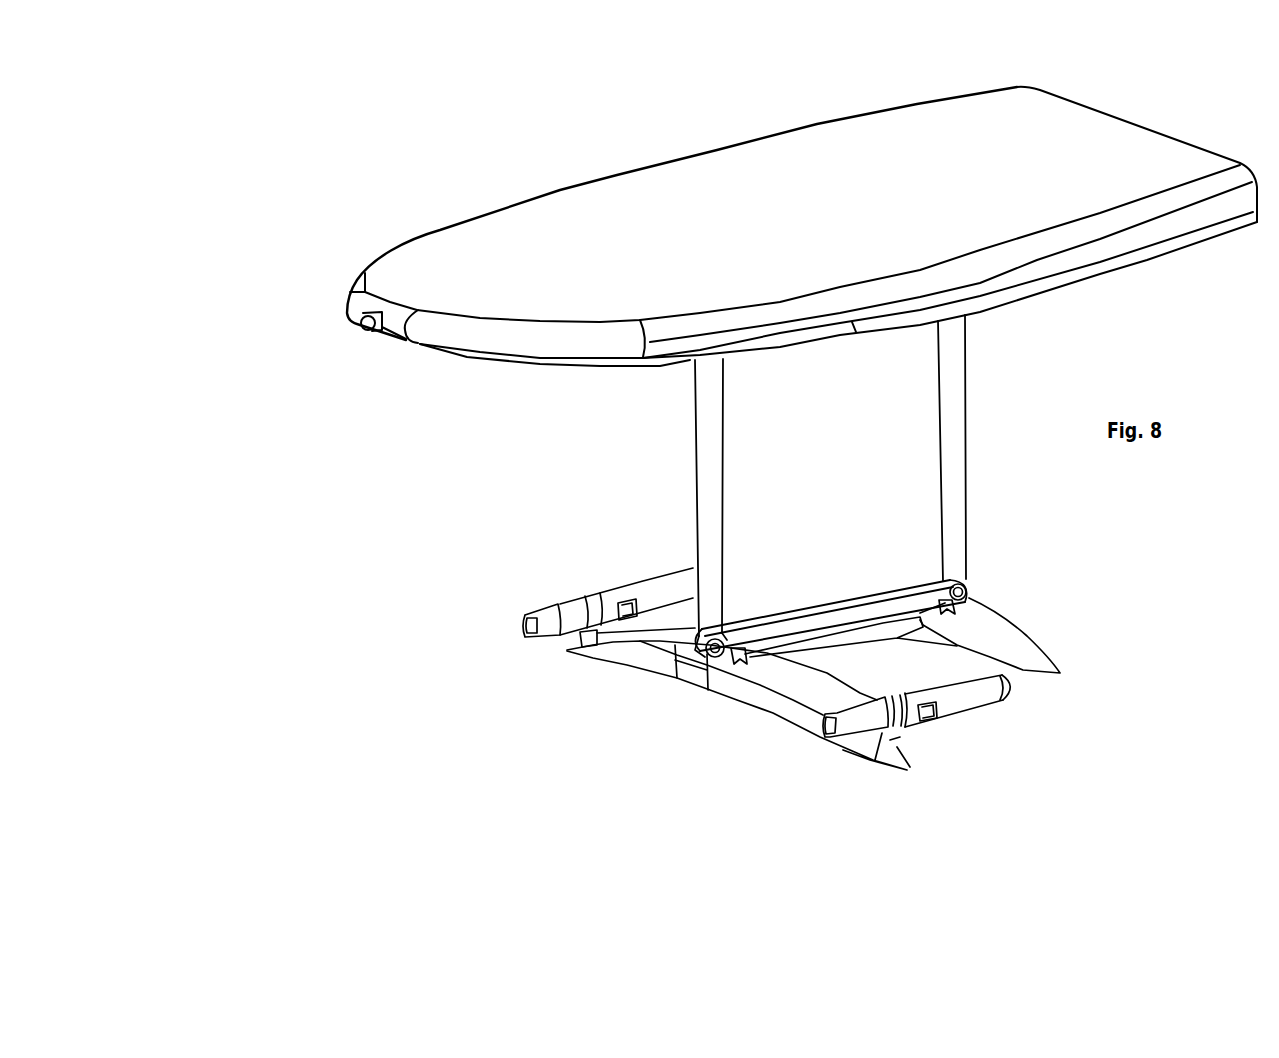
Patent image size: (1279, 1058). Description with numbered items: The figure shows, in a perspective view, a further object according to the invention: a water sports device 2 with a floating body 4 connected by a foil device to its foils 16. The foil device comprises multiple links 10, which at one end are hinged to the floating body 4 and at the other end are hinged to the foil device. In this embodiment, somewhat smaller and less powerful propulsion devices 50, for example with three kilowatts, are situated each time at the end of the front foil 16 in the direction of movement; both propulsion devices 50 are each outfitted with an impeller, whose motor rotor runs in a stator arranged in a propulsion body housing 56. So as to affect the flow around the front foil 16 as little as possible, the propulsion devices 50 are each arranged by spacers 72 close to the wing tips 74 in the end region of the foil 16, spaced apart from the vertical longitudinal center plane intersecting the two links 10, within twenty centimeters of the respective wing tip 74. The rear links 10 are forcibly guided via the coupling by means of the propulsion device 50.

The water sports device 2 is at (270, 542).
The floating body 4 is at (645, 212).
The links 10 is at (707, 487).
The foil 16 is at (783, 687).
The propulsion device 50 is at (646, 546).
The propulsion body housing 56 is at (650, 605).
The spacers 72 is at (577, 650).
The wing tips 74 is at (568, 653).